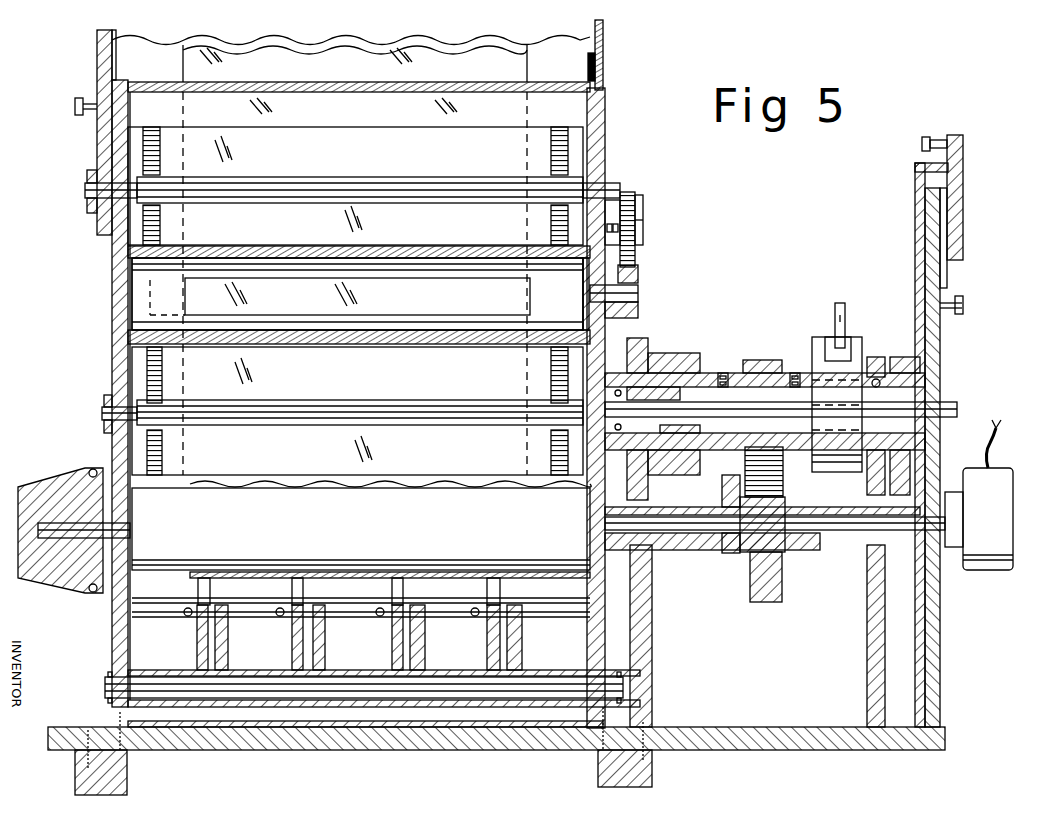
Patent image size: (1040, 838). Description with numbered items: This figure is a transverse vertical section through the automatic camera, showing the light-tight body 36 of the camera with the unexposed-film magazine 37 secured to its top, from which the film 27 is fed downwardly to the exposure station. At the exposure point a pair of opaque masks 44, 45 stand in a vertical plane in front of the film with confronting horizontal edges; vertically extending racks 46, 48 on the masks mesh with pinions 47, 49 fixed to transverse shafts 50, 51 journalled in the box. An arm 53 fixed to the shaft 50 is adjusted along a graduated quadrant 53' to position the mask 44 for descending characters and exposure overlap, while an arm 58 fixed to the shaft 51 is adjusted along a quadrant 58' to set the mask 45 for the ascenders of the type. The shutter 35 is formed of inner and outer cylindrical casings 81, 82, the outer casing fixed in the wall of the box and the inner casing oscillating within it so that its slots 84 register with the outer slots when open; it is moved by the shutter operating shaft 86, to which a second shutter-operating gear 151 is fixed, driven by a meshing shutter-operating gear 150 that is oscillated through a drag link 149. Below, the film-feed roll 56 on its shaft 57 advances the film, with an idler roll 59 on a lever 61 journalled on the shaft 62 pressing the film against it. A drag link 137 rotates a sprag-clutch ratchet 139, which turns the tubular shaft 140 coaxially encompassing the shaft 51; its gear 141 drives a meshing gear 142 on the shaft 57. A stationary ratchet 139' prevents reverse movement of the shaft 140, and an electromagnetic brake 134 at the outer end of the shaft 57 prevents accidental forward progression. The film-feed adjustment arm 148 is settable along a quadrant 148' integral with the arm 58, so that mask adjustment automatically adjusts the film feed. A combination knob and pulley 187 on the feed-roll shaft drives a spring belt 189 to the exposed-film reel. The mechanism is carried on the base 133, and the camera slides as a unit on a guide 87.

The film 27 is at (334, 60).
The shutter 35 is at (258, 246).
The body of the camera 36 is at (105, 350).
The unexposed-film magazine 37 is at (608, 53).
The opaque mask 44 is at (402, 222).
The opaque mask 45 is at (388, 378).
The rack 46 is at (160, 224).
The pinion 47 is at (448, 203).
The rack 48 is at (162, 382).
The pinion 49 is at (418, 394).
The shaft 50 is at (82, 198).
The shaft 51 is at (708, 398).
The arm 53 is at (72, 132).
The quadrant 53' is at (86, 393).
The film-feed roll 56 is at (168, 555).
The film-feed-roll shaft 57 is at (704, 534).
The arm 58 is at (963, 457).
The quadrant 58' is at (978, 230).
The idler roll 59 is at (172, 615).
The crank or lever 61 is at (197, 652).
The shaft 62 is at (104, 688).
The inner cylindrical casing 81 is at (416, 308).
The outer cylindrical casing 82 is at (458, 252).
The slot 84 is at (322, 310).
The shutter operating shaft 86 is at (640, 292).
The guide 87 is at (75, 780).
The base 133 is at (215, 750).
The electromagnetic brake 134 is at (984, 575).
The drag link 137 is at (834, 309).
The ratchet 139 is at (837, 420).
The stationary ratchet 139' is at (765, 408).
The tubular shaft 140 is at (760, 370).
The gear 141 is at (752, 372).
The gear 142 is at (782, 590).
The film-feed adjustment arm 148 is at (898, 445).
The quadrant 148' is at (972, 197).
The drag link 149 is at (648, 204).
The shutter-operating gear 150 is at (635, 188).
The second shutter-operating gear 151 is at (638, 272).
The combination knob and pulley 187 is at (38, 490).
The spring belt 189 is at (92, 468).